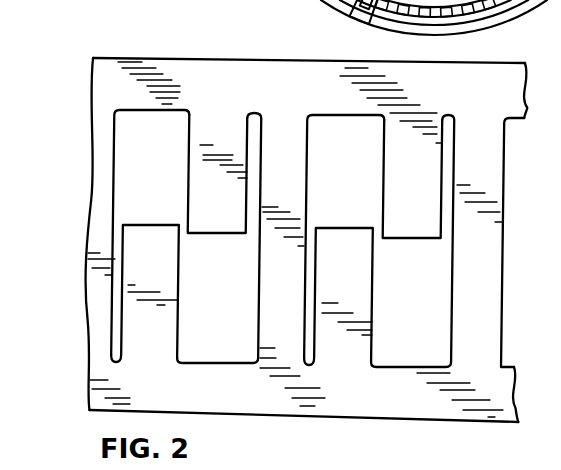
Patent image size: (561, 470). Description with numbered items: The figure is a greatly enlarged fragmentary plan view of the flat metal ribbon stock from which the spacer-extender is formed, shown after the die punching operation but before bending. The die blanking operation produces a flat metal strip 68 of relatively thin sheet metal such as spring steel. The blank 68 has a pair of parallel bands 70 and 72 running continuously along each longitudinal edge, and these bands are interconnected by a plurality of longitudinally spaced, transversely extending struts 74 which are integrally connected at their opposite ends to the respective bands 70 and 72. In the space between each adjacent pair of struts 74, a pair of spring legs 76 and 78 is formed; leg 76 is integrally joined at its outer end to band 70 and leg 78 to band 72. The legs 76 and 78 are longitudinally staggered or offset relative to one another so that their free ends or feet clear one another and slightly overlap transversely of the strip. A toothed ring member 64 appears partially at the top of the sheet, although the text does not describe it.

The toothed ring member 64 is at (367, 22).
The flat metal strip 68 is at (124, 56).
The band 70 is at (214, 68).
The band 72 is at (364, 405).
The strut 74 is at (97, 228).
The spring leg 76 is at (175, 302).
The spring leg 78 is at (200, 163).